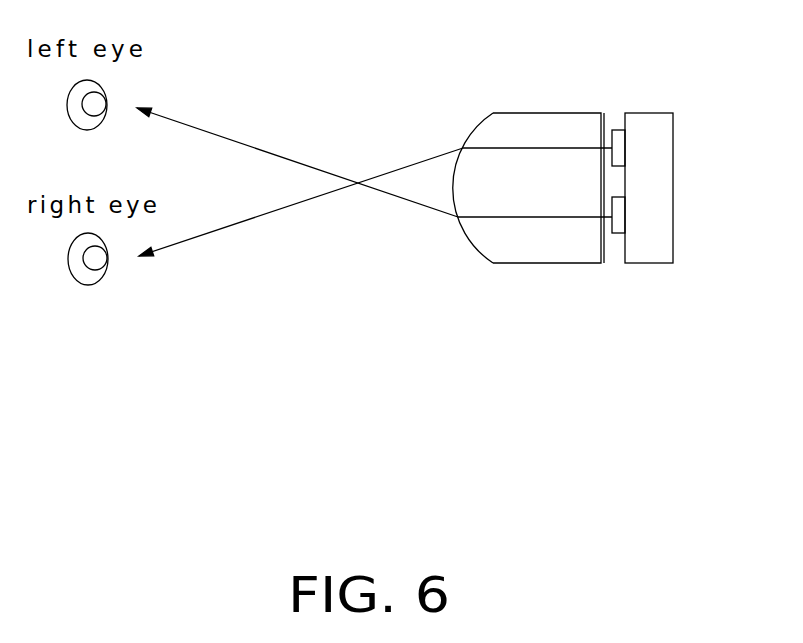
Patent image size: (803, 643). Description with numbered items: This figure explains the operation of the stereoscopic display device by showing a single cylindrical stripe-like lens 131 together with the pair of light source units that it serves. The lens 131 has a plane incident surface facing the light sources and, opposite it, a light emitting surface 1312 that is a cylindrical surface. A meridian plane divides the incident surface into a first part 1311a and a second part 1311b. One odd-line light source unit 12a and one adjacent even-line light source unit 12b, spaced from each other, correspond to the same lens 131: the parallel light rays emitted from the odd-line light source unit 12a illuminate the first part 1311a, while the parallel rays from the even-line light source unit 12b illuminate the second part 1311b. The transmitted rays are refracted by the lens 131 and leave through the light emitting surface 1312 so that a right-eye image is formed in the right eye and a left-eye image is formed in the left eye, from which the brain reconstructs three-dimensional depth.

The cylindrical stripe-like lens 131 is at (538, 128).
The light emitting surface 1312 is at (465, 130).
The first part of the incident surface 1311a is at (609, 115).
The second part of the incident surface 1311b is at (609, 258).
The odd-line light source unit 12a is at (617, 143).
The even-line light source unit 12b is at (618, 213).